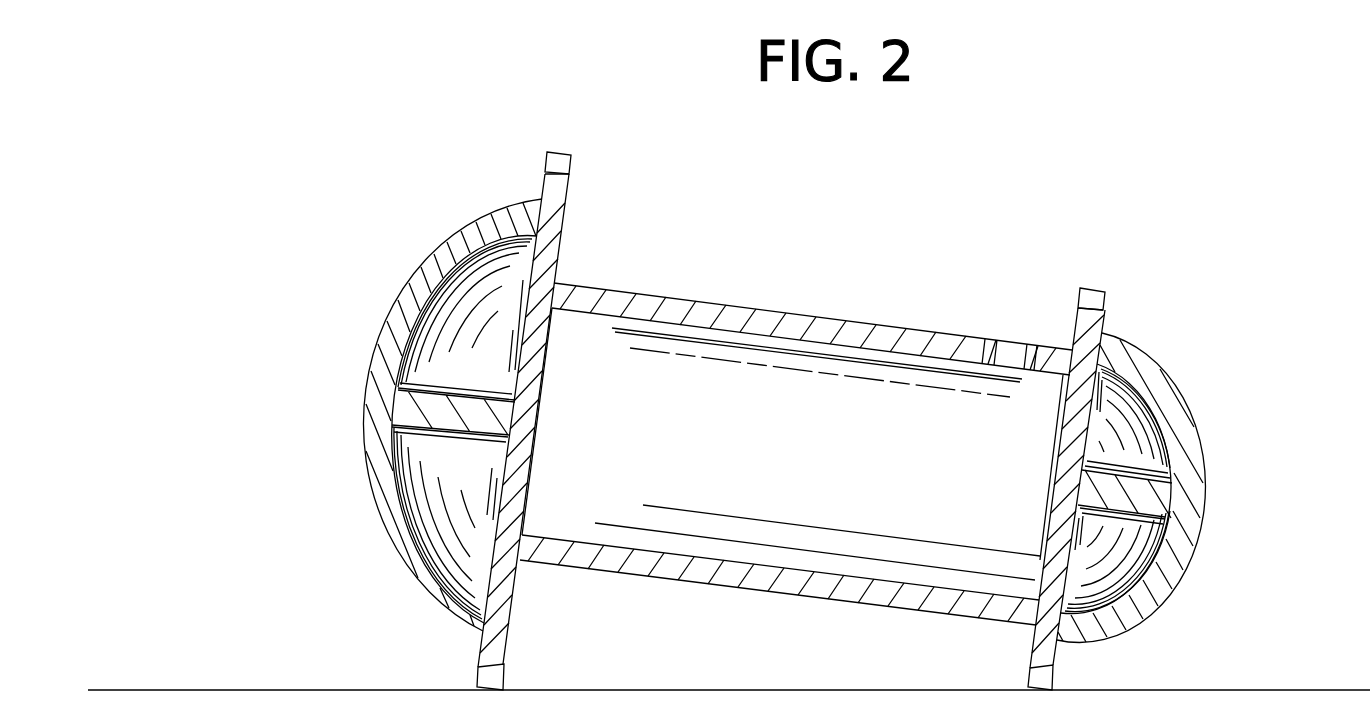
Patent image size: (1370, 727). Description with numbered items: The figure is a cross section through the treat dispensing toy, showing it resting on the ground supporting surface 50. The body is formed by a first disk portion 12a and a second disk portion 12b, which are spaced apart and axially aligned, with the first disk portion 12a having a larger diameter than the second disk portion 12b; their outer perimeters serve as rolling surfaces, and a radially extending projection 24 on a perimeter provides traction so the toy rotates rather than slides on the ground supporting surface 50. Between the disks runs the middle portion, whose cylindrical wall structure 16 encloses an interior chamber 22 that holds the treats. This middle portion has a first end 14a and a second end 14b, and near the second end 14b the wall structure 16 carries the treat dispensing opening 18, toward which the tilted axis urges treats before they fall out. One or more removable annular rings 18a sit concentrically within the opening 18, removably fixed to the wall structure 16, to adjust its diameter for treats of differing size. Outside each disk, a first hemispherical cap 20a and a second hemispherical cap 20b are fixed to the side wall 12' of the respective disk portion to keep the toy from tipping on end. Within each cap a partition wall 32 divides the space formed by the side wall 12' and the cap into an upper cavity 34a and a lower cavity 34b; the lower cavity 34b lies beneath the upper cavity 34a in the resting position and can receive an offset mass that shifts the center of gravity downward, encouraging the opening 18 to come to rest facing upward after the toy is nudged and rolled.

The side wall 12' is at (836, 205).
The first disk portion 12a is at (584, 234).
The second disk portion 12b is at (1117, 281).
The first end 14a is at (575, 320).
The second end 14b is at (1043, 382).
The cylindrical wall structure 16 is at (673, 305).
The treat dispensing opening 18 is at (1010, 350).
The annular ring 18a is at (993, 341).
The first hemispherical cap 20a is at (433, 270).
The second hemispherical cap 20b is at (1163, 403).
The interior chamber 22 is at (803, 420).
The radially extending projection 24 is at (1053, 673).
The partition wall 32 is at (430, 415).
The upper cavity 34a is at (457, 370).
The lower cavity 34b is at (440, 532).
The ground supporting surface 50 is at (262, 688).